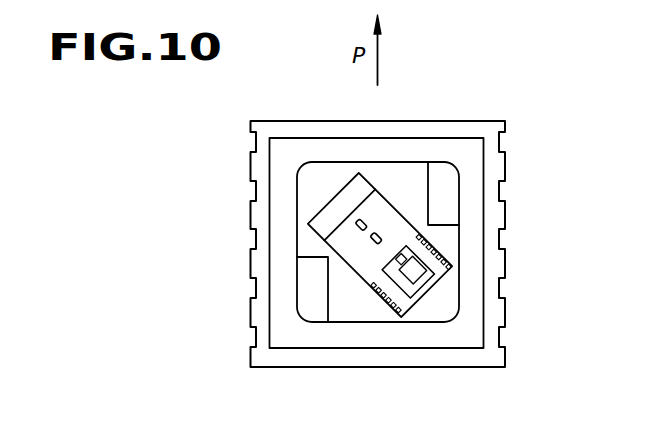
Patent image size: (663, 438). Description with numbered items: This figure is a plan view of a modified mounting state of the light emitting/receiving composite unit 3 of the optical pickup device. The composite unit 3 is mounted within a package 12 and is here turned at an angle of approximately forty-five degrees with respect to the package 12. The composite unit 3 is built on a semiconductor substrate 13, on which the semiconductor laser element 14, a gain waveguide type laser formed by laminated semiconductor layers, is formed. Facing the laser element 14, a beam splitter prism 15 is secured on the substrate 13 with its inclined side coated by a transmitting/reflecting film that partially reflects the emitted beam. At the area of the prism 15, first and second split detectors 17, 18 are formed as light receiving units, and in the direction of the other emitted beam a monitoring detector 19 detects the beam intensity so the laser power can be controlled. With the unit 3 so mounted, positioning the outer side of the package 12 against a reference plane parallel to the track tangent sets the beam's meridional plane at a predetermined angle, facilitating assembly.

The light emitting/receiving composite unit 3 is at (325, 237).
The package 12 is at (473, 235).
The semiconductor substrate 13 is at (440, 273).
The semiconductor laser element 14 is at (388, 297).
The beam splitter prism 15 is at (381, 206).
The first split detector 17 is at (373, 240).
The second split detector 18 is at (357, 228).
The monitoring detector 19 is at (422, 295).